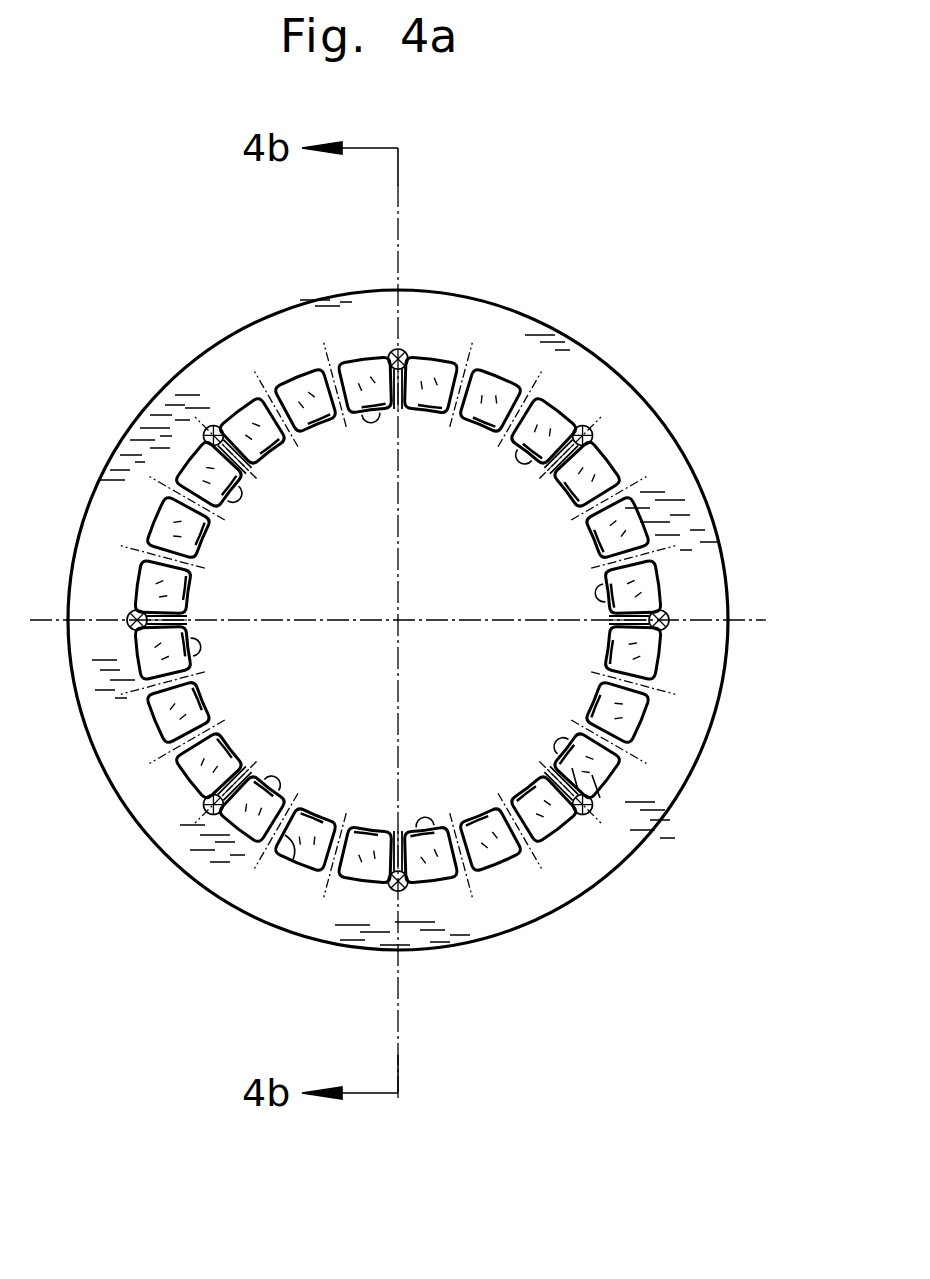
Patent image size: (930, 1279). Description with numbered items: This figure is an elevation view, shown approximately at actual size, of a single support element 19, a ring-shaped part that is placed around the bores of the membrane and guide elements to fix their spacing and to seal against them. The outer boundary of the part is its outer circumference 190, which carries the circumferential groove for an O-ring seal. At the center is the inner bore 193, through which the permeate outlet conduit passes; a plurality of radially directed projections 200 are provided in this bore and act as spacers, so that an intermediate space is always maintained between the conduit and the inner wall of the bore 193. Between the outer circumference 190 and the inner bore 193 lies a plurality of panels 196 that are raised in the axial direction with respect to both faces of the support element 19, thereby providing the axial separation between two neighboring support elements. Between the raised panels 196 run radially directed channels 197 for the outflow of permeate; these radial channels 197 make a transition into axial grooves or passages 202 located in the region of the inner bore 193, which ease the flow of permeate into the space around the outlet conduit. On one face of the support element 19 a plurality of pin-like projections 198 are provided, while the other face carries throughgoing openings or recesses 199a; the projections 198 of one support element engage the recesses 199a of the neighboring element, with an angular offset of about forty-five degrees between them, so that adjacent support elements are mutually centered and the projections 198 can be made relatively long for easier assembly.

The support element 19 is at (500, 340).
The outer circumference 190 is at (180, 375).
The inner bore 193 is at (403, 797).
The panels 196 is at (598, 463).
The radially directed channels 197 is at (628, 690).
The pin-like projections 198 is at (590, 428).
The throughgoing openings or recesses 199a is at (400, 352).
The radially directed projections 200 is at (640, 488).
The axial grooves or passages 202 is at (293, 855).